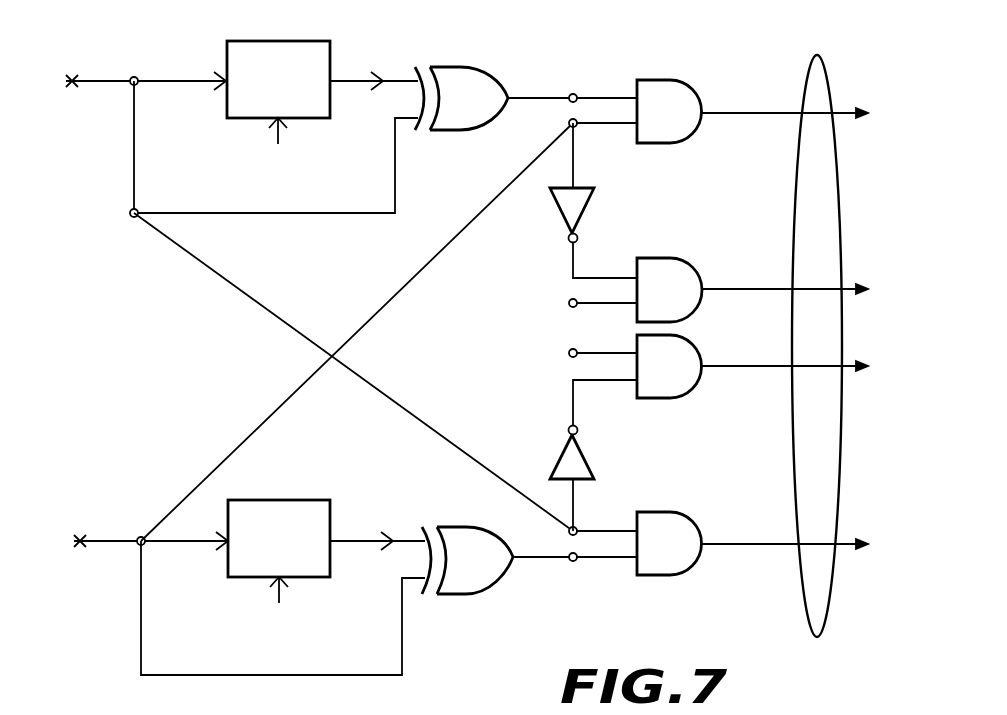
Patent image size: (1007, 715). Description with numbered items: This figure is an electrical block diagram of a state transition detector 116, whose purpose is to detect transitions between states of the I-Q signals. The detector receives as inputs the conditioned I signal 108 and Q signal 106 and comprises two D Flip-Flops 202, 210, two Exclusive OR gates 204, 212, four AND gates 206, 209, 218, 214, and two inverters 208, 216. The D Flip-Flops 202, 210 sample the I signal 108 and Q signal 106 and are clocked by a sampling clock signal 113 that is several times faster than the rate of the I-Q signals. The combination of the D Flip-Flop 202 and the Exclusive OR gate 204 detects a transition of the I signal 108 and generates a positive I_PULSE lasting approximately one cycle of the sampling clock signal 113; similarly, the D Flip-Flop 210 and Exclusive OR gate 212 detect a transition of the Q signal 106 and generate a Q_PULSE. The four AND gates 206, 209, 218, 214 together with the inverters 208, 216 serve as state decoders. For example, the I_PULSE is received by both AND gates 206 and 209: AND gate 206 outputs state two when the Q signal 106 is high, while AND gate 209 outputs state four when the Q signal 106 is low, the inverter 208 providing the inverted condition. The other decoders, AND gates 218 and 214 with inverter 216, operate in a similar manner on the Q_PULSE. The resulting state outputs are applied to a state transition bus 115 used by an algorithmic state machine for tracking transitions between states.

The Q signal 106 is at (118, 546).
The I signal 108 is at (106, 84).
The sampling clock signal 113 is at (277, 135).
The state transition bus 115 is at (816, 54).
The state transition detector 116 is at (797, 675).
The D Flip-Flop 202 is at (287, 40).
The Exclusive OR gate 204 is at (463, 66).
The AND gate 206 is at (663, 78).
The inverter 208 is at (590, 210).
The AND gate 209 is at (677, 256).
The D Flip-Flop 210 is at (283, 500).
The Exclusive OR gate 212 is at (473, 522).
The AND gate 214 is at (678, 508).
The inverter 216 is at (563, 453).
The AND gate 218 is at (682, 398).